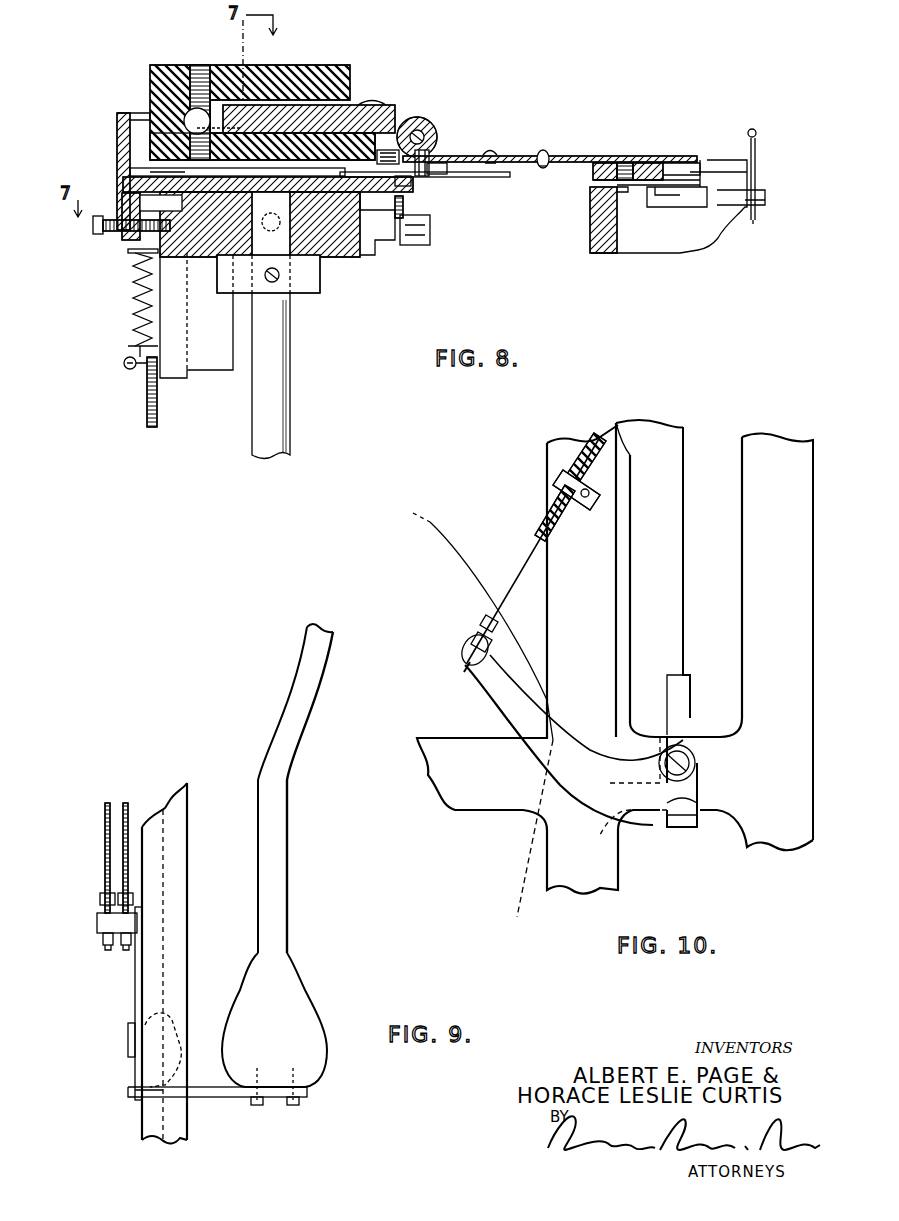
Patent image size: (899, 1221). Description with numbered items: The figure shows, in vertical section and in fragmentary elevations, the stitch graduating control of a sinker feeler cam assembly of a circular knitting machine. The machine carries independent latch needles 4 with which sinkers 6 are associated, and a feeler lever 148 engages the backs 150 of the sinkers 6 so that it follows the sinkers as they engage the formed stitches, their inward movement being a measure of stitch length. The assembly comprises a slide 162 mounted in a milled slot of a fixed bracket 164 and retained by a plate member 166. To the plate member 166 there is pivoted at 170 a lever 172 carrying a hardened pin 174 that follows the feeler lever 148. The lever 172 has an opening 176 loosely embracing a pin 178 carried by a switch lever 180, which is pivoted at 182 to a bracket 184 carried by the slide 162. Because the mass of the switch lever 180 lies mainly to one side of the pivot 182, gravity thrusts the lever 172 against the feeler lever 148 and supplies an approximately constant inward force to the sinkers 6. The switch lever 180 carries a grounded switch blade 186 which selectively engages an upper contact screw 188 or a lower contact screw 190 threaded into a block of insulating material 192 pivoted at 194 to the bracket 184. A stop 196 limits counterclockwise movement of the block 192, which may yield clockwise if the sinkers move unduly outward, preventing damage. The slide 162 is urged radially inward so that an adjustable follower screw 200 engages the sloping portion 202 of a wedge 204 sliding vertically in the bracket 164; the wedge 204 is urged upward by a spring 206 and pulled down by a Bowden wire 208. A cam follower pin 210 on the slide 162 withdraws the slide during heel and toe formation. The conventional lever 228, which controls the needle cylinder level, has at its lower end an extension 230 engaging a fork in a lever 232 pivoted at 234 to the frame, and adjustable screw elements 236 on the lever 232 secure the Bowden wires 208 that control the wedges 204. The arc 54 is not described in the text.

In FIG. 8, the latch needles 4 is at (758, 136).
In FIG. 8, the sinkers 6 is at (722, 165).
In FIG. 10, the arc path of cable 54 is at (448, 540).
In FIG. 8, the feeler lever 148 is at (650, 162).
In FIG. 8, the backs of the sinkers 150 is at (700, 190).
In FIG. 8, the slide 162 is at (412, 183).
In FIG. 8, the fixed bracket 164 is at (210, 255).
In FIG. 8, the plate member 166 is at (505, 178).
In FIG. 8, the pivot 170 is at (492, 152).
In FIG. 8, the lever 172 is at (535, 158).
In FIG. 8, the hardened pin 174 is at (545, 168).
In FIG. 8, the opening 176 is at (430, 158).
In FIG. 8, the pin 178 is at (437, 175).
In FIG. 8, the switch lever 180 is at (372, 102).
In FIG. 8, the pivot 182 is at (430, 125).
In FIG. 8, the bracket 184 is at (395, 116).
In FIG. 8, the switch blade 186 is at (210, 110).
In FIG. 8, the upper contact screw 188 is at (200, 66).
In FIG. 8, the lower contact screw 190 is at (165, 143).
In FIG. 8, the block of insulating material 192 is at (292, 67).
In FIG. 8, the pivot 194 is at (391, 159).
In FIG. 8, the stop 196 is at (150, 176).
In FIG. 8, the adjustable follower screw 200 is at (105, 233).
In FIG. 8, the sloping portion 202 is at (182, 203).
In FIG. 8, the wedge 204 is at (175, 378).
In FIG. 8, the spring 206 is at (133, 310).
In FIG. 8, the Bowden wire 208 is at (145, 403).
In FIG. 9, the Bowden wire 208 is at (125, 848).
In FIG. 10, the Bowden wire 208 is at (525, 555).
In FIG. 8, the cam follower pin 210 is at (404, 207).
In FIG. 9, the lever 228 is at (275, 975).
In FIG. 10, the lever 228 is at (672, 628).
In FIG. 10, the extension 230 is at (680, 828).
In FIG. 10, the lever 232 is at (572, 755).
In FIG. 10, the pivot 234 is at (690, 770).
In FIG. 9, the adjustable screw elements 236 is at (123, 946).